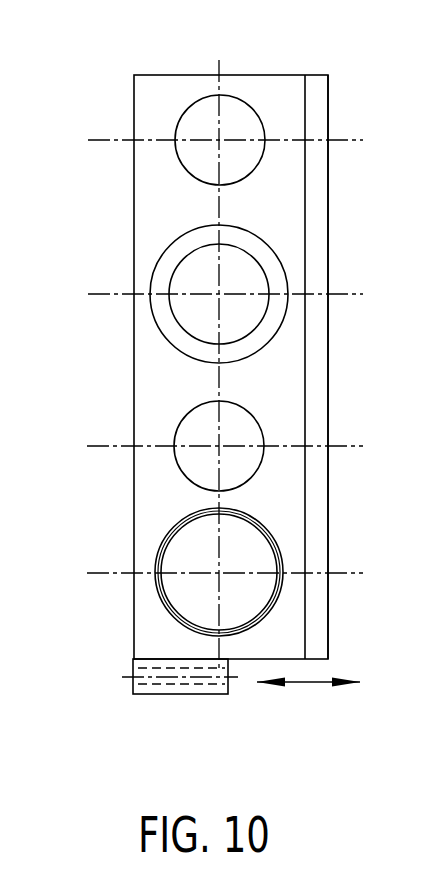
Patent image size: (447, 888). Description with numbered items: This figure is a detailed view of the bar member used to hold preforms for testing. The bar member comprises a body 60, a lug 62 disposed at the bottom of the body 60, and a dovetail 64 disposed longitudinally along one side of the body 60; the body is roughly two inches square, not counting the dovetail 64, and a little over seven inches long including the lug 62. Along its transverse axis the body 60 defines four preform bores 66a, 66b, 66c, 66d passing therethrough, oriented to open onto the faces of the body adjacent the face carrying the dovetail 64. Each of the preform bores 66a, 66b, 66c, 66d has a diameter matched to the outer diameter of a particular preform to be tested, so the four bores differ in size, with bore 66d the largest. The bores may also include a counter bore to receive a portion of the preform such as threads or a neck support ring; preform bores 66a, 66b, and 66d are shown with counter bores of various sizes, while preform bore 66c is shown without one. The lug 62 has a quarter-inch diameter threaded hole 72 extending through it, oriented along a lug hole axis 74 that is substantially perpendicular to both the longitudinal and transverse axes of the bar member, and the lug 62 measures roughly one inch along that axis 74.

The body 60 is at (160, 633).
The lug 62 is at (138, 697).
The dovetail 64 is at (317, 113).
The preform bore 66a is at (216, 138).
The preform bore 66b is at (218, 292).
The preform bore 66c is at (218, 445).
The preform bore 66d is at (218, 571).
The threaded hole 72 is at (183, 697).
The lug hole axis 74 is at (308, 700).